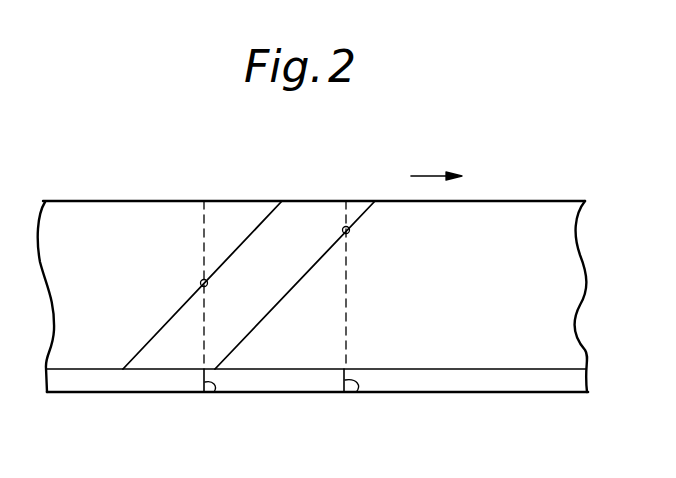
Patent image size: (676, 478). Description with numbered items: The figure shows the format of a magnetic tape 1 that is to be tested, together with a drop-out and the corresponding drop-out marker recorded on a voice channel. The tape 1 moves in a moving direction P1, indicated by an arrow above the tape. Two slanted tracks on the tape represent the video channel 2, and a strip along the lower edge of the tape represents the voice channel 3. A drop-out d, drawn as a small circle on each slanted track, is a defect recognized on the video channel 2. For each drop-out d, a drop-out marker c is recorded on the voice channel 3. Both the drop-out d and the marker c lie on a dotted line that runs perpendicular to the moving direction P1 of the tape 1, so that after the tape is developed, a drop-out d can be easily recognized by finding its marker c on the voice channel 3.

The tape 1 is at (149, 213).
The video channel 2 is at (253, 232).
The voice channel 3 is at (109, 383).
The drop-out marker c is at (214, 393).
The drop-out d is at (200, 281).
The moving direction of the tape P1 is at (436, 163).